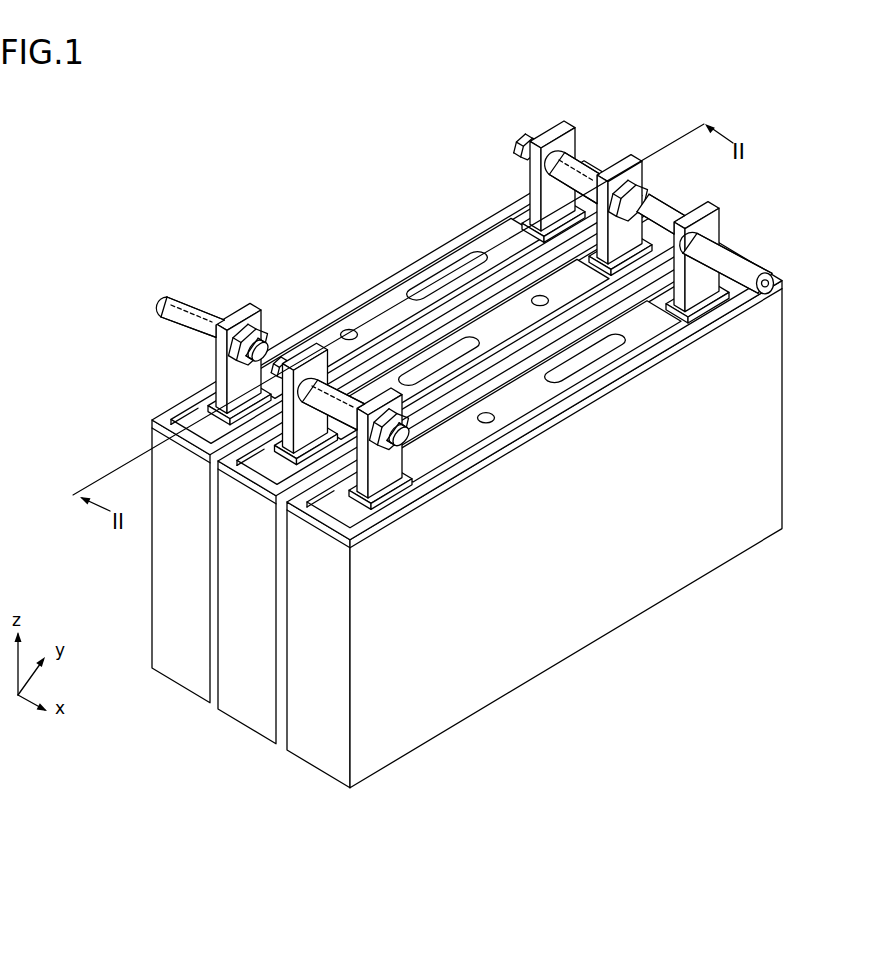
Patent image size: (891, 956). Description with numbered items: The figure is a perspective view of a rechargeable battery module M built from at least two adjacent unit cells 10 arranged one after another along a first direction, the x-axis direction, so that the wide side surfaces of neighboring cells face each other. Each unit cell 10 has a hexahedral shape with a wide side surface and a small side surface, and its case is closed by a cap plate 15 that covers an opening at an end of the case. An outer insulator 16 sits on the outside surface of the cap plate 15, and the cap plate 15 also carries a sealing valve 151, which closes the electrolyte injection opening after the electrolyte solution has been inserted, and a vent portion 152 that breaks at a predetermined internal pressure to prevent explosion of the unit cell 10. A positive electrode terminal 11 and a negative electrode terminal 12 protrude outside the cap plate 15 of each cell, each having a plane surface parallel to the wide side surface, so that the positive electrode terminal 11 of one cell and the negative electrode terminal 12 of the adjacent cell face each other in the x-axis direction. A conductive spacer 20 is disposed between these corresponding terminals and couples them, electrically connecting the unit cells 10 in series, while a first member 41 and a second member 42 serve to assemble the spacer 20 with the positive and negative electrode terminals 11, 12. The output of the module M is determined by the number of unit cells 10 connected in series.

The rechargeable battery module M is at (226, 146).
The unit cell 10 is at (798, 476).
The positive electrode terminal 11 is at (633, 144).
The negative electrode terminal 12 is at (713, 222).
The cap plate 15 is at (393, 300).
The sealing valve 151 is at (330, 337).
The vent portion 152 is at (453, 276).
The outer insulator 16 is at (692, 308).
The conductive spacer 20 is at (584, 148).
The first member 41 is at (394, 438).
The second member 42 is at (272, 372).